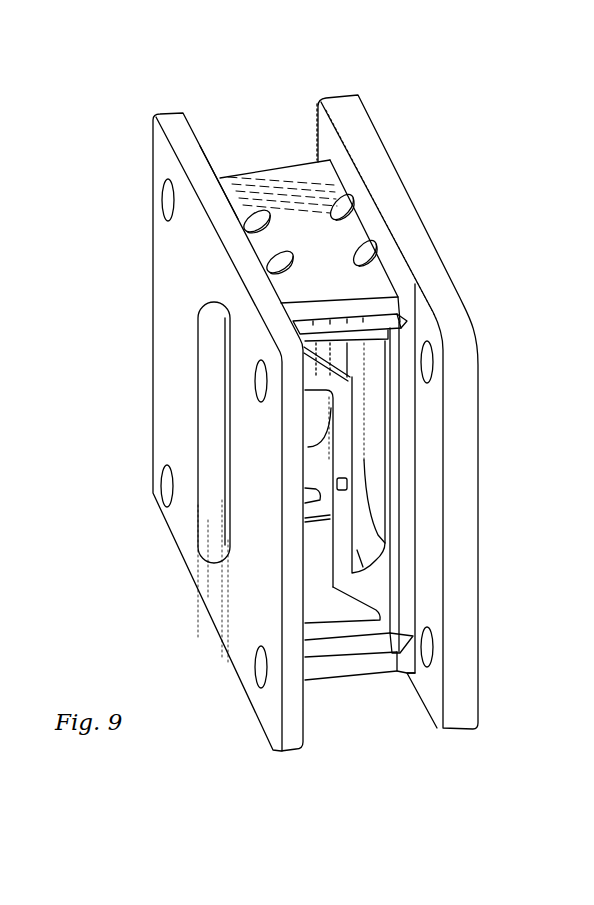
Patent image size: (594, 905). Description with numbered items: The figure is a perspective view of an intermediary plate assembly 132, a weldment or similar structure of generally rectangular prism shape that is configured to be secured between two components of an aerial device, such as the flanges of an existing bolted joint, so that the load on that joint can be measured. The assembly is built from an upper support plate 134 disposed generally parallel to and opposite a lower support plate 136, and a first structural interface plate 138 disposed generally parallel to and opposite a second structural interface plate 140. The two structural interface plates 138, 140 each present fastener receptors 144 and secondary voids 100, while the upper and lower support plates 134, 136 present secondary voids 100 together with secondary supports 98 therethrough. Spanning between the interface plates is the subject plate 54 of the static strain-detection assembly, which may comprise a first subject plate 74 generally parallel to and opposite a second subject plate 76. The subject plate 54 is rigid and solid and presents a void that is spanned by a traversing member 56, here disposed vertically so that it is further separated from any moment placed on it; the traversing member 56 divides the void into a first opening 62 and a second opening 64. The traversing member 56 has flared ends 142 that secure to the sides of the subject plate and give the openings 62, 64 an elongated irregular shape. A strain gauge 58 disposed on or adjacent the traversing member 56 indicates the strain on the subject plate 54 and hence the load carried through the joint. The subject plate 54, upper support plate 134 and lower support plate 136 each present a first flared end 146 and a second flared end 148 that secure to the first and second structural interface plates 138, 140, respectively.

The intermediary plate assembly 132 is at (92, 114).
The upper support plate 134 is at (277, 177).
The lower support plate 136 is at (358, 667).
The first structural interface plate 138 is at (153, 391).
The second structural interface plate 140 is at (470, 393).
The flared ends 142 is at (316, 377).
The fastener receptors 144 is at (160, 201).
The first flared end 146 is at (219, 162).
The second flared end 148 is at (331, 152).
The secondary voids 100 is at (376, 249).
The secondary supports 98 is at (275, 242).
The subject plate 54 is at (400, 328).
The traversing member 56 is at (336, 553).
The strain gauge 58 is at (405, 472).
The first opening 62 is at (320, 608).
The second opening 64 is at (381, 483).
The first subject plate 74 is at (402, 552).
The second subject plate 76 is at (317, 470).